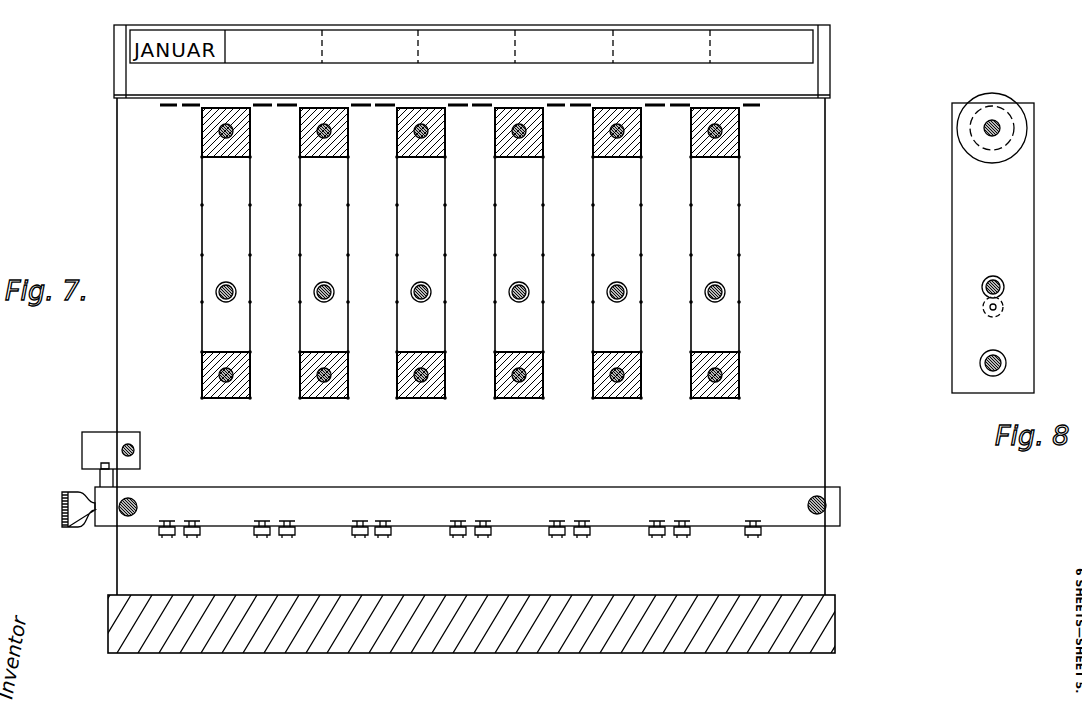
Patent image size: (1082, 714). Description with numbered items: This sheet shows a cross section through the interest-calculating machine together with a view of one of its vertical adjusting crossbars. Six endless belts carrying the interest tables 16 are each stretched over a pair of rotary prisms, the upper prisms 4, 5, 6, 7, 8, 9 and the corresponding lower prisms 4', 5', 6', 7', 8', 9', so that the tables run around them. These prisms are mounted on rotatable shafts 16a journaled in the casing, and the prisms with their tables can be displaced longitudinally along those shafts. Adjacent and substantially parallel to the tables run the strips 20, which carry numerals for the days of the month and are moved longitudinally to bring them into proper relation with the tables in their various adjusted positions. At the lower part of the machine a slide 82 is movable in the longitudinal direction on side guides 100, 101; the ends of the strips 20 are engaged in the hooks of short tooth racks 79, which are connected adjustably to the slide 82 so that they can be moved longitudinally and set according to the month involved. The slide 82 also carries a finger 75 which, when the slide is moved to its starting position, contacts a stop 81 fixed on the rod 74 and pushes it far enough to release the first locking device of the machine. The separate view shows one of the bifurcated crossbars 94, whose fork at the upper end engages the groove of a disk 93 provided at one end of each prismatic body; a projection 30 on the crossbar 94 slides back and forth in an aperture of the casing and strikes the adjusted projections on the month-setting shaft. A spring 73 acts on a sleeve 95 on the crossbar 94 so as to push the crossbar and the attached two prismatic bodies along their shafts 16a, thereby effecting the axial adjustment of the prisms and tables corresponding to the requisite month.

In FIG. 7, the rotary prism 4 is at (210, 254).
In FIG. 7, the rotary prism 5 is at (309, 254).
In FIG. 7, the rotary prism 6 is at (406, 254).
In FIG. 7, the rotary prism 7 is at (505, 254).
In FIG. 7, the rotary prism 8 is at (603, 254).
In FIG. 7, the rotary prism 9 is at (701, 254).
In FIG. 7, the rotary prism 4' is at (209, 375).
In FIG. 7, the rotary prism 5' is at (307, 374).
In FIG. 7, the rotary prism 6' is at (404, 374).
In FIG. 7, the rotary prism 7' is at (502, 374).
In FIG. 7, the rotary prism 8' is at (600, 374).
In FIG. 7, the rotary prism 9' is at (698, 374).
In FIG. 7, the interest table 16 is at (202, 322).
In FIG. 7, the rotatable shaft 16a is at (516, 125).
In FIG. 8, the rotatable shaft 16a is at (984, 132).
In FIG. 7, the strip 20 is at (280, 106).
In FIG. 7, the spring 73 is at (224, 271).
In FIG. 7, the rod 74 is at (135, 450).
In FIG. 7, the finger 75 is at (100, 478).
In FIG. 7, the tooth rack 79 is at (262, 538).
In FIG. 7, the stop 81 is at (100, 433).
In FIG. 7, the slide 82 is at (110, 524).
In FIG. 8, the disk 93 is at (978, 103).
In FIG. 8, the crossbar 94 is at (962, 214).
In FIG. 8, the sleeve 95 is at (982, 288).
In FIG. 8, the projection 30 is at (983, 307).
In FIG. 7, the side guide 100 is at (138, 505).
In FIG. 7, the side guide 101 is at (827, 506).